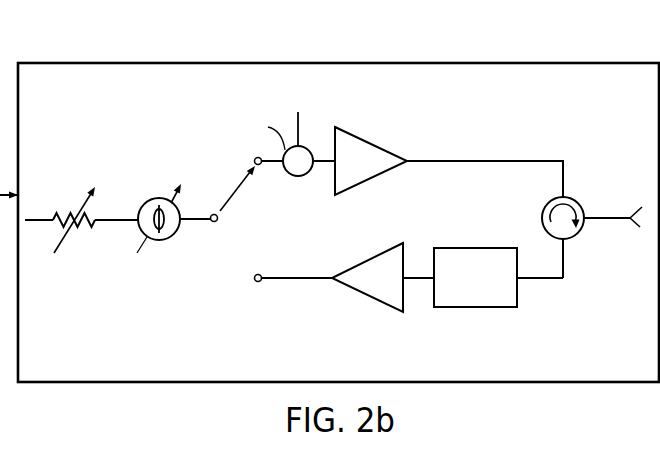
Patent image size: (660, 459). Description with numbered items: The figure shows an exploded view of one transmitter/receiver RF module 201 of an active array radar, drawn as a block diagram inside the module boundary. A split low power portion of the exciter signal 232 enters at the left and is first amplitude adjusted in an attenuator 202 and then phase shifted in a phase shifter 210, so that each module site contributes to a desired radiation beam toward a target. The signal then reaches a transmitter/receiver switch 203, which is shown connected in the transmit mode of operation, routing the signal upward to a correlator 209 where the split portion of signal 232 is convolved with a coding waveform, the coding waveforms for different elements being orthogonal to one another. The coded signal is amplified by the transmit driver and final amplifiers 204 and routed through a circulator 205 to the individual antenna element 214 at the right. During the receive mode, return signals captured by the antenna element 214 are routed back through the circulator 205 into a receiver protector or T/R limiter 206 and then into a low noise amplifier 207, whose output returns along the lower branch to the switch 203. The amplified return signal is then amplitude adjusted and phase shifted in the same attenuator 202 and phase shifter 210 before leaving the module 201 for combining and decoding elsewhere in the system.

The T/R RF module 201 is at (338, 63).
The signal 232 is at (42, 220).
The attenuator 202 is at (68, 232).
The phase shifter 210 is at (160, 241).
The T/R switch 203 is at (227, 203).
The correlator 209 is at (298, 176).
The transmit driver and final amplifiers 204 is at (373, 178).
The circulator 205 is at (542, 220).
The antenna element 214 is at (640, 228).
The low noise amplifier 207 is at (368, 295).
The T/R limiter 206 is at (477, 310).